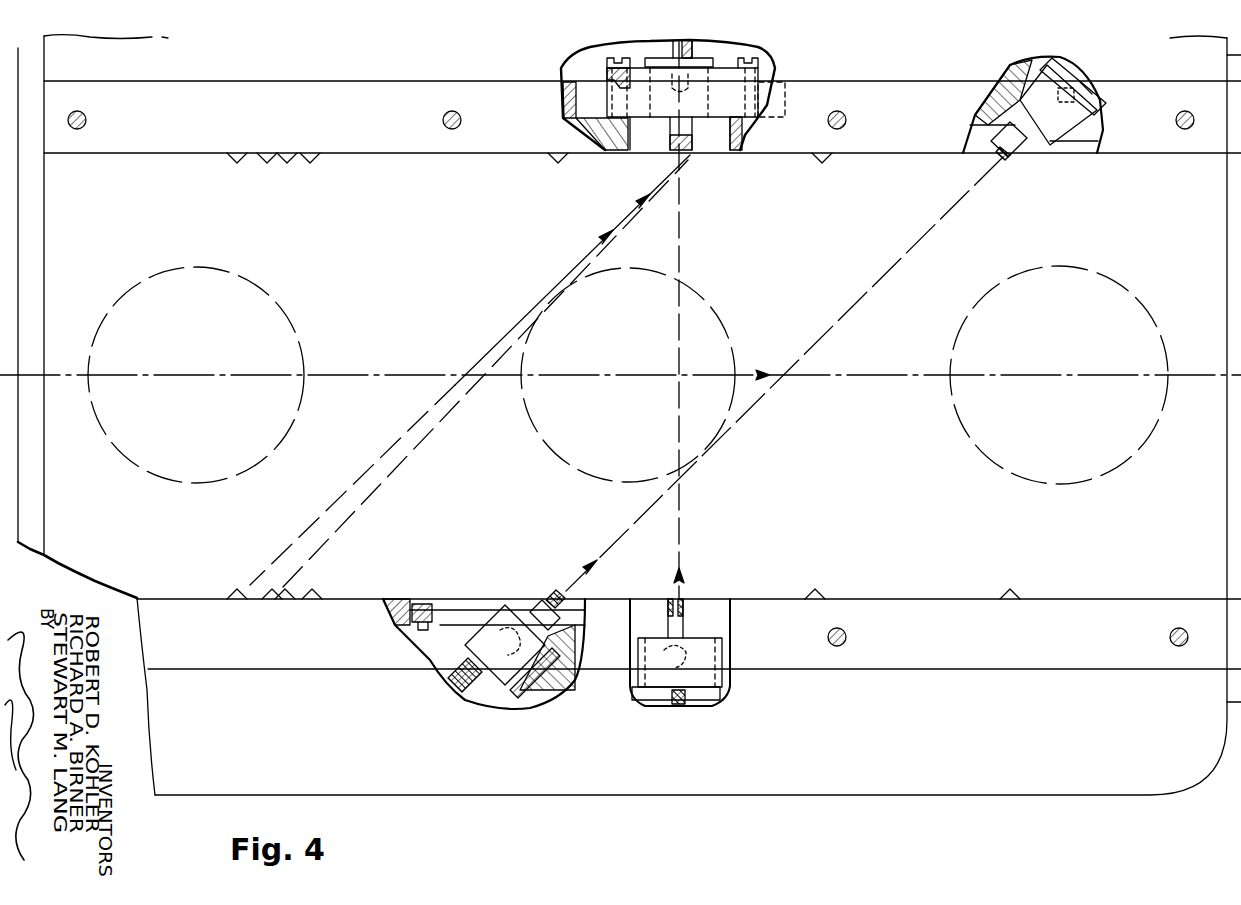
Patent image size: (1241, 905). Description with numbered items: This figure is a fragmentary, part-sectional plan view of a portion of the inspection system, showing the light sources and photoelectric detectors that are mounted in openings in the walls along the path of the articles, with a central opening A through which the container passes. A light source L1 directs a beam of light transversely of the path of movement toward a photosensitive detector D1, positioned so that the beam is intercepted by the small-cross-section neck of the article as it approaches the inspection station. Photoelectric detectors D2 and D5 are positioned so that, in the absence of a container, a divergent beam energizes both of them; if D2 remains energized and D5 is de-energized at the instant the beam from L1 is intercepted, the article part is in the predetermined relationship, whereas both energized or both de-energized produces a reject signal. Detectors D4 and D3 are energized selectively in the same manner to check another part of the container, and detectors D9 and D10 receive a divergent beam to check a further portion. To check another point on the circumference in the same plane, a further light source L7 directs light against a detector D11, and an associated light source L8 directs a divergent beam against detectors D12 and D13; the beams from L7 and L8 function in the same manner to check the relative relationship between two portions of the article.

The aperture in plate A is at (697, 293).
The photosensitive device or detector D1 is at (690, 156).
The photoelectric detector D2 is at (283, 592).
The detector D3 is at (310, 592).
The detector D4 is at (288, 154).
The photoelectric detector D5 is at (313, 155).
The detector D9 is at (235, 164).
The detector D10 is at (268, 164).
The detector D11 is at (1026, 158).
The detector D12 is at (240, 586).
The detector D13 is at (270, 586).
The light source L1 is at (690, 598).
The light source L7 is at (552, 599).
The light source L8 is at (710, 155).